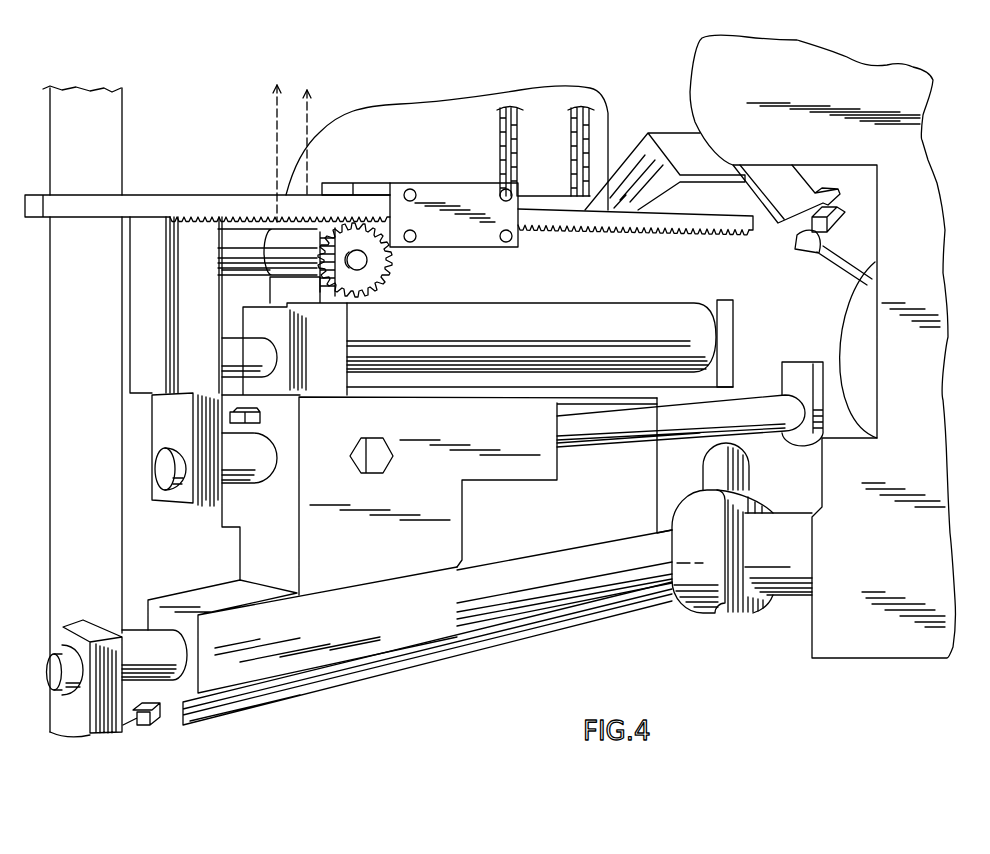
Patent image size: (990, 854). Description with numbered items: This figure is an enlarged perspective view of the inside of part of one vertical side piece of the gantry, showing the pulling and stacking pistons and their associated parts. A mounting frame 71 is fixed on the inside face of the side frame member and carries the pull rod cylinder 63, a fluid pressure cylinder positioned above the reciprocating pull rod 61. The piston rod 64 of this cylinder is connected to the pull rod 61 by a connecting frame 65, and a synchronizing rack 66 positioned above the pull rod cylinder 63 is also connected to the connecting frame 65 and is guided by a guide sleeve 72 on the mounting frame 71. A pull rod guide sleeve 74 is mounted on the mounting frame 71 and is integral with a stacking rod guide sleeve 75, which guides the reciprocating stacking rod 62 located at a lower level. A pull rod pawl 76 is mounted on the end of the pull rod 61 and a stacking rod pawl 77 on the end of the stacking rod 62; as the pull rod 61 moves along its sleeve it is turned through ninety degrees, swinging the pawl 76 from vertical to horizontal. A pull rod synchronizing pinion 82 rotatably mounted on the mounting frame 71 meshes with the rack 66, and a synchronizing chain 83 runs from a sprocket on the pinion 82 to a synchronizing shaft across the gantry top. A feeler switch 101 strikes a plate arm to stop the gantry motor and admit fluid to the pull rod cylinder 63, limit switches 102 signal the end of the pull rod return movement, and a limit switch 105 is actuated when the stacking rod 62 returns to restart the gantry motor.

The pull rod 61 is at (592, 450).
The stacking rod 62 is at (531, 568).
The pull rod cylinder 63 is at (557, 312).
The piston rod 64 is at (232, 338).
The connecting frame 65 is at (200, 342).
The synchronizing rack 66 is at (660, 230).
The mounting frame 71 is at (642, 482).
The guide sleeve 72 is at (431, 192).
The pull rod guide sleeve 74 is at (265, 465).
The stacking rod guide sleeve 75 is at (161, 606).
The pull rod pawl 76 is at (797, 370).
The stacking rod pawl 77 is at (743, 468).
The pull rod synchronizing pinion 82 is at (372, 268).
The synchronizing chain 83 is at (276, 113).
The feeler switch 101 is at (810, 247).
The limit switch 102 is at (262, 422).
The limit switch 105 is at (150, 725).